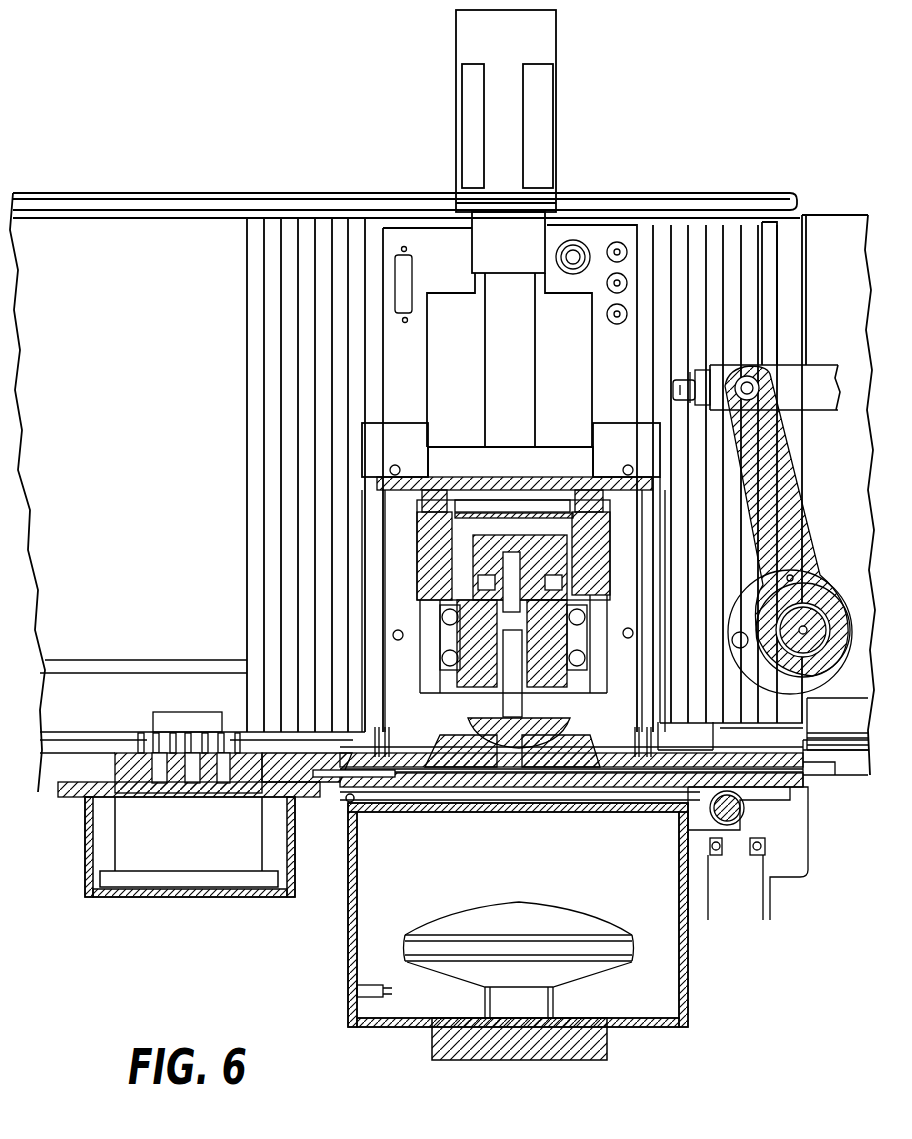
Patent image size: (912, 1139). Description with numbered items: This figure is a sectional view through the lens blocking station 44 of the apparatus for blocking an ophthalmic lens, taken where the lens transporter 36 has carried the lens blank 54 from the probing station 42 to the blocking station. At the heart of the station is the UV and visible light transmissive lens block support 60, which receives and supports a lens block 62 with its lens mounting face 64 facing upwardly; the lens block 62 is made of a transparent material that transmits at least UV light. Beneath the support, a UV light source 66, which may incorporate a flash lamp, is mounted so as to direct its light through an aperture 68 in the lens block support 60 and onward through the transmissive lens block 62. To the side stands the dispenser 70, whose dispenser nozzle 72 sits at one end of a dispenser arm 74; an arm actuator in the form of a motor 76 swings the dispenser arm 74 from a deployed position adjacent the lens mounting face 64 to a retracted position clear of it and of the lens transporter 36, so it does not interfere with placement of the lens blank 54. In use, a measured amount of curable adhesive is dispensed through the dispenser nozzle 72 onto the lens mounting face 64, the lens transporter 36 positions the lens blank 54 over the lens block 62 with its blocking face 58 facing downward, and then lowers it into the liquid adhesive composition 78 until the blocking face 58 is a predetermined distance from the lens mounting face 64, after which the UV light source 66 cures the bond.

The lens transporter 36 is at (415, 467).
The probing station 42 is at (150, 728).
The lens blocking station 44 is at (332, 652).
The lens blank 54 is at (570, 720).
The blocking face 58 is at (453, 738).
The lens block support 60 is at (463, 737).
The lens block 62 is at (372, 768).
The lens mounting face 64 is at (567, 732).
The UV light source 66 is at (452, 965).
The aperture 68 is at (495, 790).
The dispenser 70 is at (727, 550).
The dispenser nozzle 72 is at (672, 392).
The dispenser arm 74 is at (777, 538).
The motor 76 is at (813, 683).
The liquid adhesive composition 78 is at (556, 790).